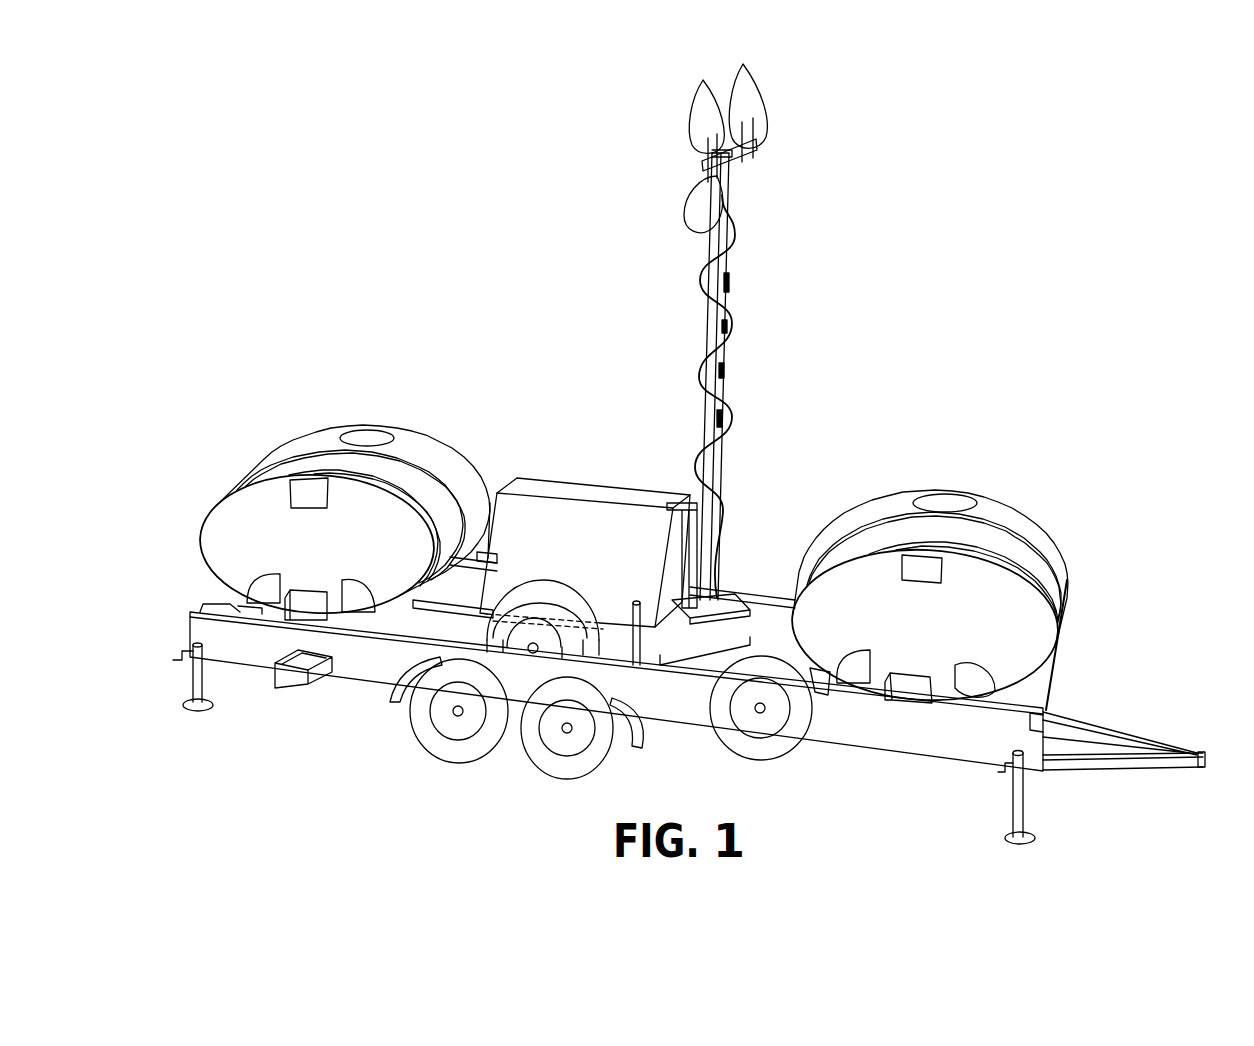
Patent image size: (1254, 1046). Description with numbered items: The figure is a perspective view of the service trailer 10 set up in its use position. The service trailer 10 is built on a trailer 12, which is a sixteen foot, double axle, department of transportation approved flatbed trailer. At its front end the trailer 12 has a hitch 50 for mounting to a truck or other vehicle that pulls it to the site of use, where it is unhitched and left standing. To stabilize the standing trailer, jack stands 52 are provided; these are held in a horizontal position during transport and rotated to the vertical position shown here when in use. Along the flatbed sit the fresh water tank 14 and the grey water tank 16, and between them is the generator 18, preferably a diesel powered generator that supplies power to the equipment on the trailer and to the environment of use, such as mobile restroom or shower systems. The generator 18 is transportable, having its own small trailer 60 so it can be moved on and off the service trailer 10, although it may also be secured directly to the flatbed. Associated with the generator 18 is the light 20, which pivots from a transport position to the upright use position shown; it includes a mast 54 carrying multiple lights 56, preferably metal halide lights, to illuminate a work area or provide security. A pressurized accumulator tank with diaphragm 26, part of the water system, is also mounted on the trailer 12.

The service trailer 10 is at (346, 331).
The trailer 12 is at (372, 668).
The fresh water tank 14 is at (939, 627).
The grey water tank 16 is at (327, 548).
The generator 18 is at (605, 552).
The light 20 is at (620, 311).
The pressurized accumulator tank with diaphragm 26 is at (830, 672).
The hitch 50 is at (1199, 750).
The jack stands 52 is at (190, 680).
The mast 54 is at (710, 327).
The lights 56 is at (703, 113).
The trailer 60 is at (537, 592).